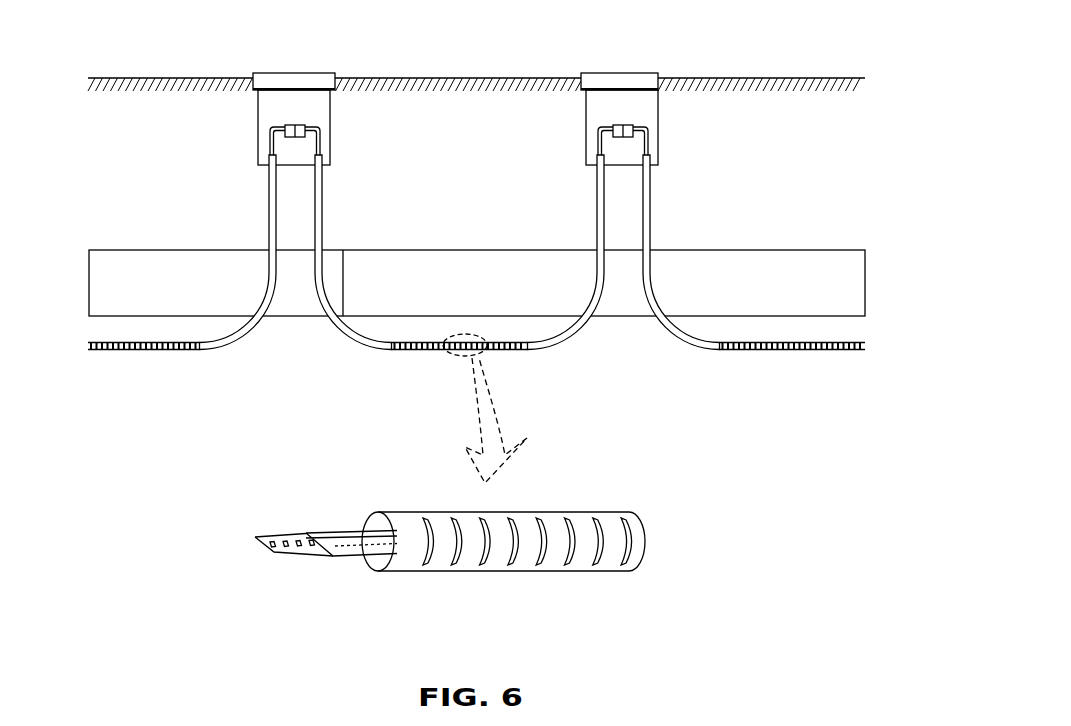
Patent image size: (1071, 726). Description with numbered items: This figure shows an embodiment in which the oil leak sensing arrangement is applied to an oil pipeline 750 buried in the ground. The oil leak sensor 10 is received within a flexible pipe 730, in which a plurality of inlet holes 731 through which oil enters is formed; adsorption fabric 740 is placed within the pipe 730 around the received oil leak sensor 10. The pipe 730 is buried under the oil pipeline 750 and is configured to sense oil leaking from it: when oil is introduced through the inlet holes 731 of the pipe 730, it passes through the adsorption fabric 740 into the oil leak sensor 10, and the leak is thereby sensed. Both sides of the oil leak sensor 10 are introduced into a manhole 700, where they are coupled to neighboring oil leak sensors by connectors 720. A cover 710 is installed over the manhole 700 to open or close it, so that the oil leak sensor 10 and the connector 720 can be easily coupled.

The oil leak sensor 10 is at (320, 137).
The manhole 700 is at (258, 117).
The cover 710 is at (265, 80).
The connector 720 is at (297, 128).
The flexible pipe 730 is at (350, 343).
The inlet holes 731 is at (577, 540).
The adsorption fabric 740 is at (344, 534).
The oil pipeline 750 is at (458, 257).